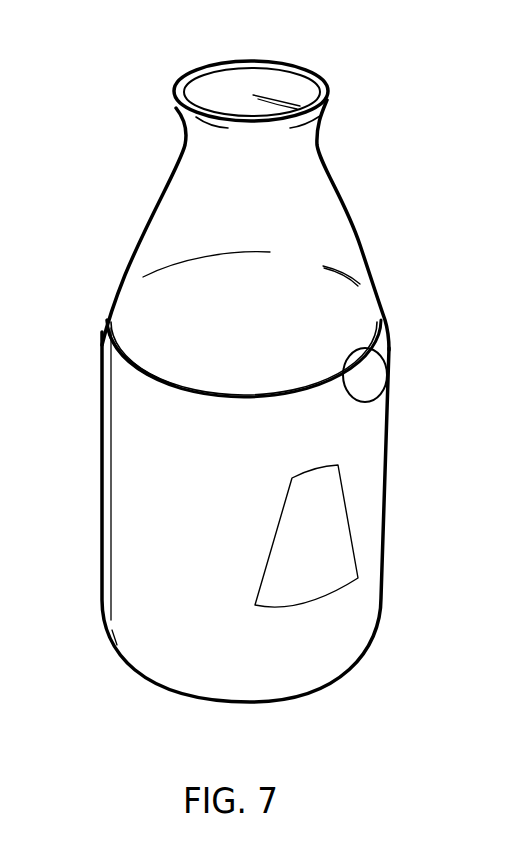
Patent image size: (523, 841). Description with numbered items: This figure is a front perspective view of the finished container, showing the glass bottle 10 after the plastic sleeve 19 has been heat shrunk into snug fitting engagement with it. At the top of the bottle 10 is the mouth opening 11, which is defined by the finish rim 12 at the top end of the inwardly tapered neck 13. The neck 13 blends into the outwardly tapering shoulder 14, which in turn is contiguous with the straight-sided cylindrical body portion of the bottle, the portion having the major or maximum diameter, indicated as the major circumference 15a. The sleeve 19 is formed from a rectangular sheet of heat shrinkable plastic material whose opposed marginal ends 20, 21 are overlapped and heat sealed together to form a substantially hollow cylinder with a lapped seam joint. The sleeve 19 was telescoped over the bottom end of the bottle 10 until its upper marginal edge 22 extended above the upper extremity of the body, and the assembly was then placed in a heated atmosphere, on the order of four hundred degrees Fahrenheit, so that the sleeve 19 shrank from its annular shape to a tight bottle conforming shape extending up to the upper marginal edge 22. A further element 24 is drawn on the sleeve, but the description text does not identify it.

The glass bottle 10 is at (305, 261).
The mouth opening 11 is at (252, 80).
The finish rim 12 is at (327, 88).
The neck 13 is at (319, 112).
The shoulder 14 is at (354, 222).
The major circumference 15a is at (390, 397).
The sleeve 19 is at (143, 518).
The marginal end 20 is at (100, 473).
The marginal end 21 is at (141, 366).
The upper marginal edge 22 is at (107, 323).
The label 24 is at (343, 560).